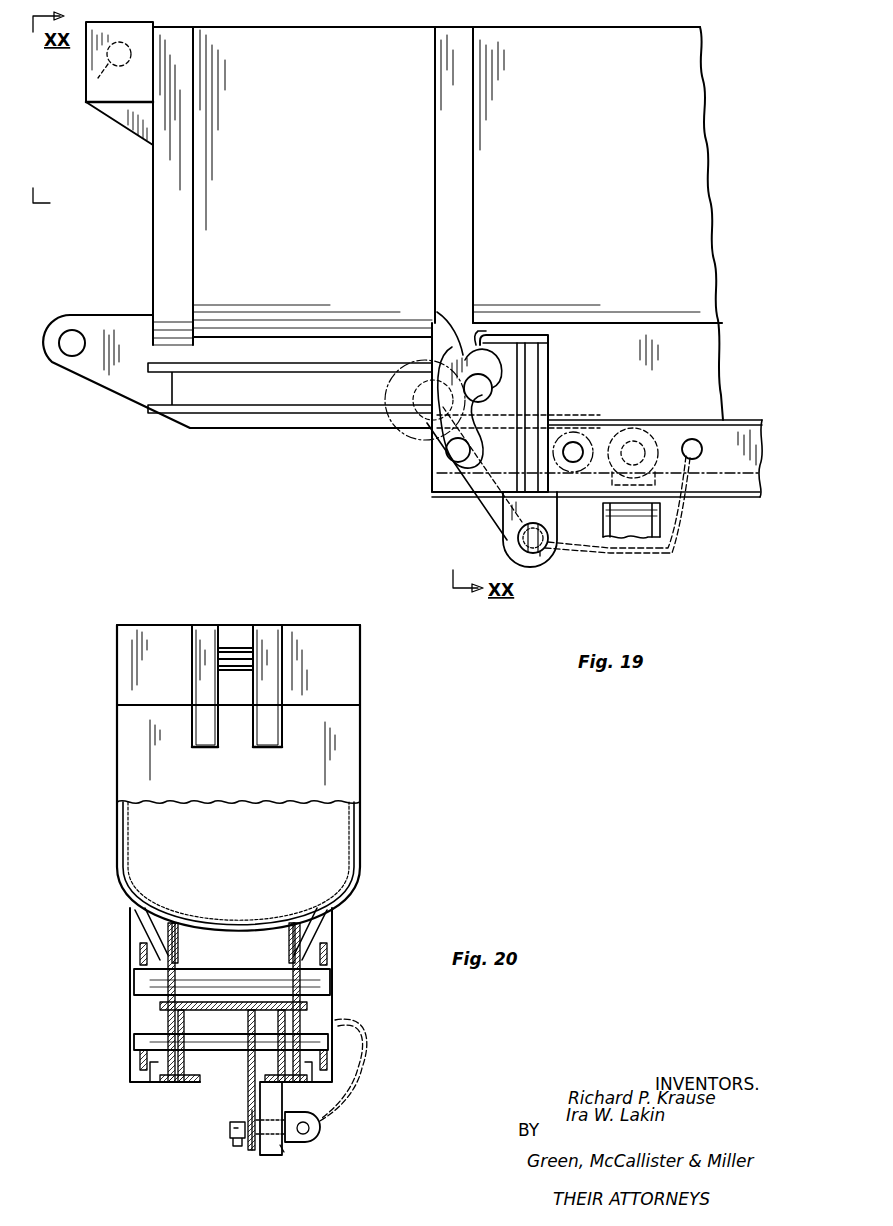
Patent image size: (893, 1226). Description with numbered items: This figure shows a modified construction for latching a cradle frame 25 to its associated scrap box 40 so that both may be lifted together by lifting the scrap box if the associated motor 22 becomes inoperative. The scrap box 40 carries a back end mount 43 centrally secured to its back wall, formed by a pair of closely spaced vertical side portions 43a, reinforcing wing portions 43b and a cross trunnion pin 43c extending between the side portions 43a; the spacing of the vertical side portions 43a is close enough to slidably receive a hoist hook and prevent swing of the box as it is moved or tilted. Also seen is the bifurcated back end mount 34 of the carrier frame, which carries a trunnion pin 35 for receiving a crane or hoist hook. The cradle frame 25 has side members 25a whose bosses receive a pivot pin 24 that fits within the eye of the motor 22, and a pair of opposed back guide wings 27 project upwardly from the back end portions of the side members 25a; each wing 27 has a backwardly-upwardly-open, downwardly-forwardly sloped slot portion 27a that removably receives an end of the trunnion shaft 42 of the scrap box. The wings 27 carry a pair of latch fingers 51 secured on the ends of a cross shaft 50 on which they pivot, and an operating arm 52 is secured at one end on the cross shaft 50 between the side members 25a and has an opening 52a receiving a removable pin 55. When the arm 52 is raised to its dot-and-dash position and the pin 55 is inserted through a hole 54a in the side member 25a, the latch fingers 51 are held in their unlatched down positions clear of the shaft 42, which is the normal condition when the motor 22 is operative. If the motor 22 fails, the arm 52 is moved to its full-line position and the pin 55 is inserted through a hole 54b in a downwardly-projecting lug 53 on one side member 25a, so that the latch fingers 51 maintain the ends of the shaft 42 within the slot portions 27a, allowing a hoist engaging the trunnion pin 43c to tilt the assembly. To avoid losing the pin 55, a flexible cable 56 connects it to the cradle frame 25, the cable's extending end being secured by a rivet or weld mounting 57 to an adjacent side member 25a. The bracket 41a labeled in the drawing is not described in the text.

In FIG. 19, the motor 22 is at (650, 537).
In FIG. 19, the pivot pin 24 is at (642, 430).
In FIG. 19, the cradle frame 25 is at (760, 500).
In FIG. 19, the side members 25a is at (740, 420).
In FIG. 20, the side members 25a is at (231, 1012).
In FIG. 19, the back guide wings 27 is at (560, 356).
In FIG. 20, the back guide wings 27 is at (140, 908).
In FIG. 19, the slot portion 27a is at (482, 338).
In FIG. 19, the bifurcated back end mount 34 is at (128, 312).
In FIG. 19, the trunnion pin 35 is at (62, 335).
In FIG. 19, the scrap box 40 is at (722, 218).
In FIG. 20, the scrap box 40 is at (362, 785).
In FIG. 19, the bracket 41a is at (722, 362).
In FIG. 20, the bracket 41a is at (290, 946).
In FIG. 19, the trunnion shaft 42 is at (495, 392).
In FIG. 20, the trunnion shaft 42 is at (330, 984).
In FIG. 19, the back end mount 43 is at (84, 63).
In FIG. 20, the back end mount 43 is at (281, 623).
In FIG. 19, the vertical side portions 43a is at (138, 135).
In FIG. 20, the vertical side portions 43a is at (260, 768).
In FIG. 19, the reinforcing wing portions 43b is at (102, 98).
In FIG. 20, the reinforcing wing portions 43b is at (120, 652).
In FIG. 19, the cross trunnion pin 43c is at (86, 85).
In FIG. 20, the cross trunnion pin 43c is at (234, 648).
In FIG. 19, the cross shaft 50 is at (455, 452).
In FIG. 20, the cross shaft 50 is at (134, 1042).
In FIG. 19, the latch fingers 51 is at (437, 314).
In FIG. 20, the latch fingers 51 is at (140, 950).
In FIG. 19, the operating arm 52 is at (476, 502).
In FIG. 20, the operating arm 52 is at (248, 1063).
In FIG. 20, the opening 52a is at (250, 1112).
In FIG. 19, the downwardly-projecting lug 53 is at (538, 556).
In FIG. 20, the downwardly-projecting lug 53 is at (286, 1155).
In FIG. 19, the hole 54a is at (578, 448).
In FIG. 19, the hole 54b is at (503, 537).
In FIG. 20, the hole 54b is at (268, 1158).
In FIG. 19, the removable pin 55 is at (548, 548).
In FIG. 20, the removable pin 55 is at (318, 1140).
In FIG. 19, the flexible cable 56 is at (673, 542).
In FIG. 20, the flexible cable 56 is at (356, 1092).
In FIG. 19, the rivet or weld mounting 57 is at (700, 455).